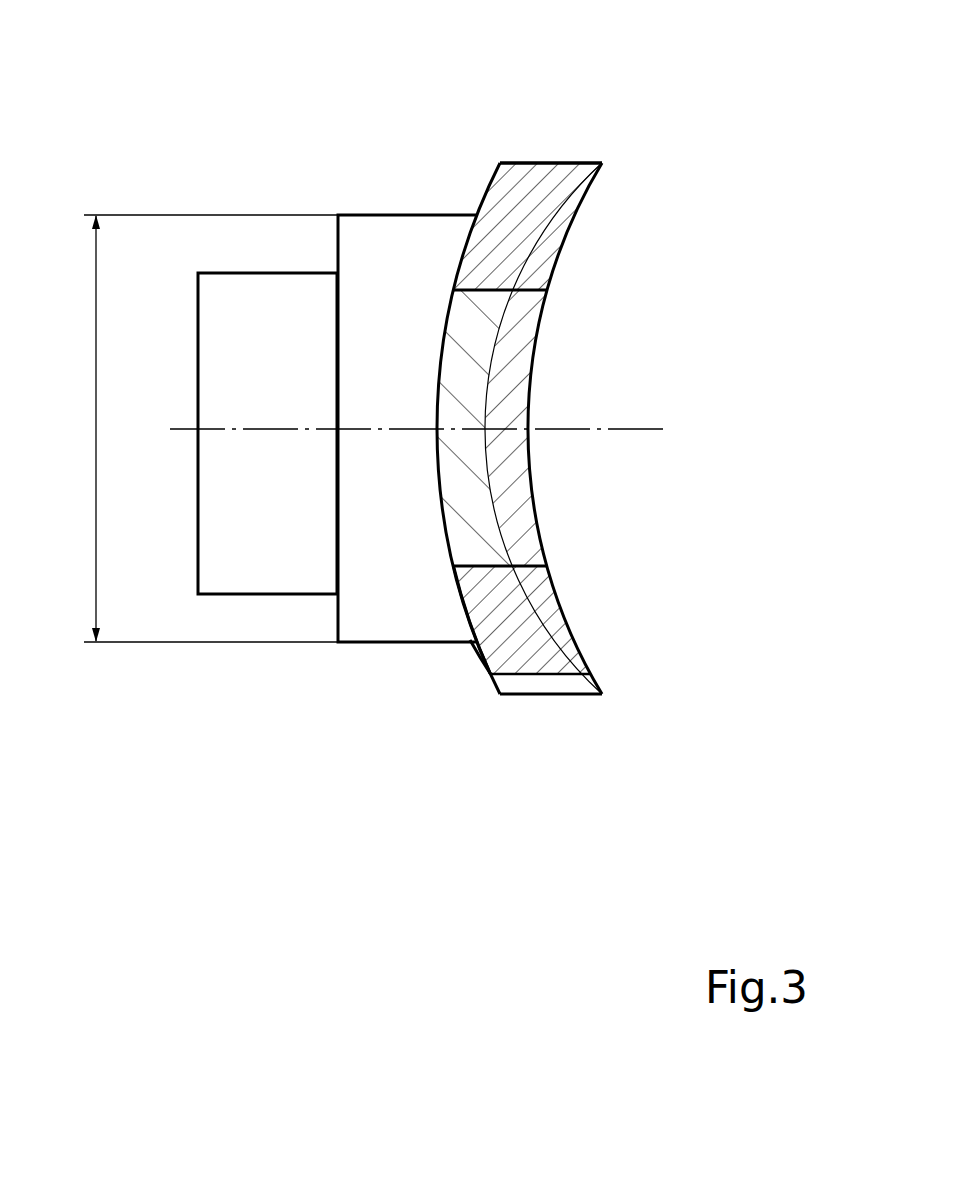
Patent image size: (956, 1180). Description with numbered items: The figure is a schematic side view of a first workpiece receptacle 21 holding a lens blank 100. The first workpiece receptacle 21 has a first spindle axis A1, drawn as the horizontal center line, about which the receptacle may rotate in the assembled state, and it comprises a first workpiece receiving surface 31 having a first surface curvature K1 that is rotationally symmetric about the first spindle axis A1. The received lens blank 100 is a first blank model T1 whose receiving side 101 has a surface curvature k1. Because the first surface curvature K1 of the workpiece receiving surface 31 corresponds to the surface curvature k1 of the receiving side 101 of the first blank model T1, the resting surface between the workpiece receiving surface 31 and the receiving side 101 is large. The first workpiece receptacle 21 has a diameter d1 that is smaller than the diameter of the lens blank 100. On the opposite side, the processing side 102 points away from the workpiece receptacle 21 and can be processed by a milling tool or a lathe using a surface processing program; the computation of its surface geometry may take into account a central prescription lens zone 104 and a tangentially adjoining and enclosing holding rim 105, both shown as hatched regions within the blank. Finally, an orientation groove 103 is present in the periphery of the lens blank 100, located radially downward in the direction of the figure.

The lens blank 100 is at (590, 431).
The first blank model T1 is at (550, 162).
The receiving side 101 is at (487, 188).
The processing side 102 is at (580, 211).
The orientation groove 103 is at (554, 684).
The central prescription lens zone 104 is at (470, 385).
The holding rim 105 is at (533, 217).
The first workpiece receptacle 21 is at (243, 272).
The first workpiece receiving surface 31 is at (448, 318).
The first spindle axis A1 is at (636, 430).
The diameter d1 is at (189, 428).
The first surface curvature K1 is at (457, 590).
The surface curvature k1 is at (480, 656).